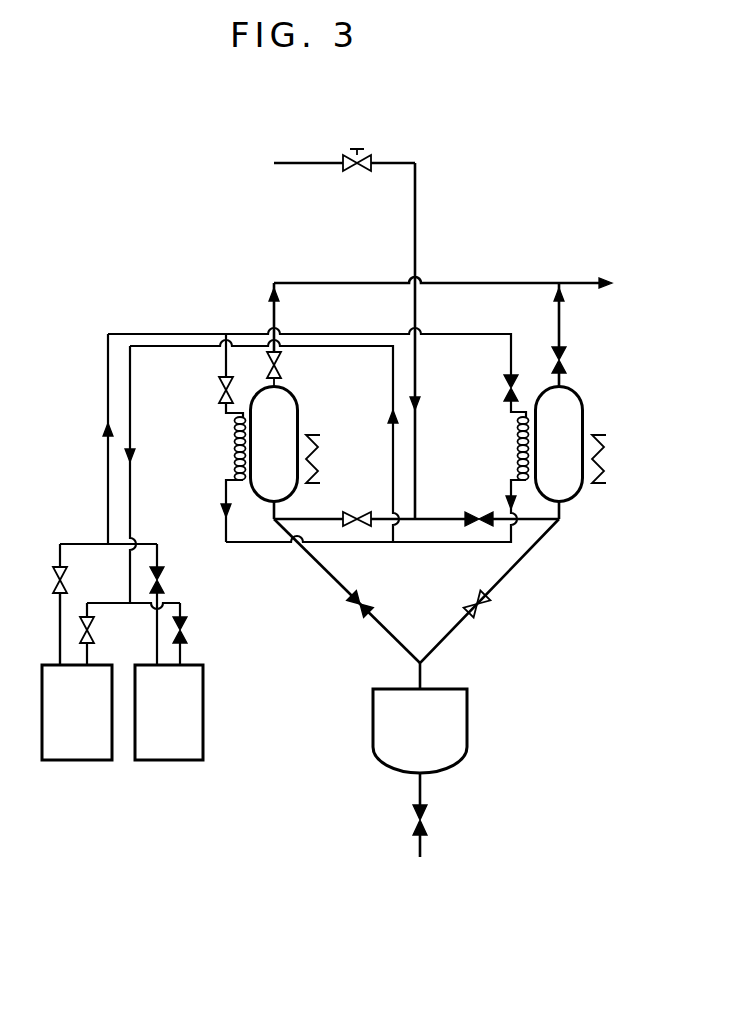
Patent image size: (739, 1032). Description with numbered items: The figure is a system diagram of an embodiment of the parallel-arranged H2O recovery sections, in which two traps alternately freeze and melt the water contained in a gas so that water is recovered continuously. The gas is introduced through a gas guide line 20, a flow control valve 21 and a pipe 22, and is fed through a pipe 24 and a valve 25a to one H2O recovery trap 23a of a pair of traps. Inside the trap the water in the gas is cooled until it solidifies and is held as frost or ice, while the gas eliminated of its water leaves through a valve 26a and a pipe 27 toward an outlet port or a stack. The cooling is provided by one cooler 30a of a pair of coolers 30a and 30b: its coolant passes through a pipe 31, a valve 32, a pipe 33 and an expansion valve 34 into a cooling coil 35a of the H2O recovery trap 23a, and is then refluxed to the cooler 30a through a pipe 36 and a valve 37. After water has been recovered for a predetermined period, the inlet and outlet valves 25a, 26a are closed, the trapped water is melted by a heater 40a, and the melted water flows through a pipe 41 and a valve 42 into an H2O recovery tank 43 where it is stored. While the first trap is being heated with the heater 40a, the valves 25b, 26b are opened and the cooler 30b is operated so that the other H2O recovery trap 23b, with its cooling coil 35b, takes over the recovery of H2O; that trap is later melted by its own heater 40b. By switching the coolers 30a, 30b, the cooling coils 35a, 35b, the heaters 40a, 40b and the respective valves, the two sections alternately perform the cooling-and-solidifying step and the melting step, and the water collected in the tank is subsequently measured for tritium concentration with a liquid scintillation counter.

The gas guide line 20 is at (288, 160).
The flow control valve 21 is at (352, 170).
The pipe 22 is at (416, 221).
The H2O recovery trap 23a is at (298, 406).
The H2O recovery trap 23b is at (583, 406).
The pipe 24 is at (392, 531).
The valve 25a is at (357, 513).
The valve 25b is at (478, 512).
The valve 26a is at (282, 362).
The valve 26b is at (507, 393).
The pipe 27 is at (276, 311).
The cooler 30a is at (76, 760).
The cooler 30b is at (170, 760).
The pipe 31 is at (60, 620).
The valve 32 is at (52, 578).
The pipe 33 is at (226, 365).
The expansion valve 34 is at (221, 390).
The cooling coil 35a is at (234, 437).
The cooling coil 35b is at (517, 440).
The pipe 36 is at (374, 347).
The valve 37 is at (94, 632).
The heater 40a is at (319, 461).
The heater 40b is at (600, 463).
The pipe 41 is at (328, 577).
The valve 42 is at (356, 612).
The H2O recovery tank 43 is at (468, 724).